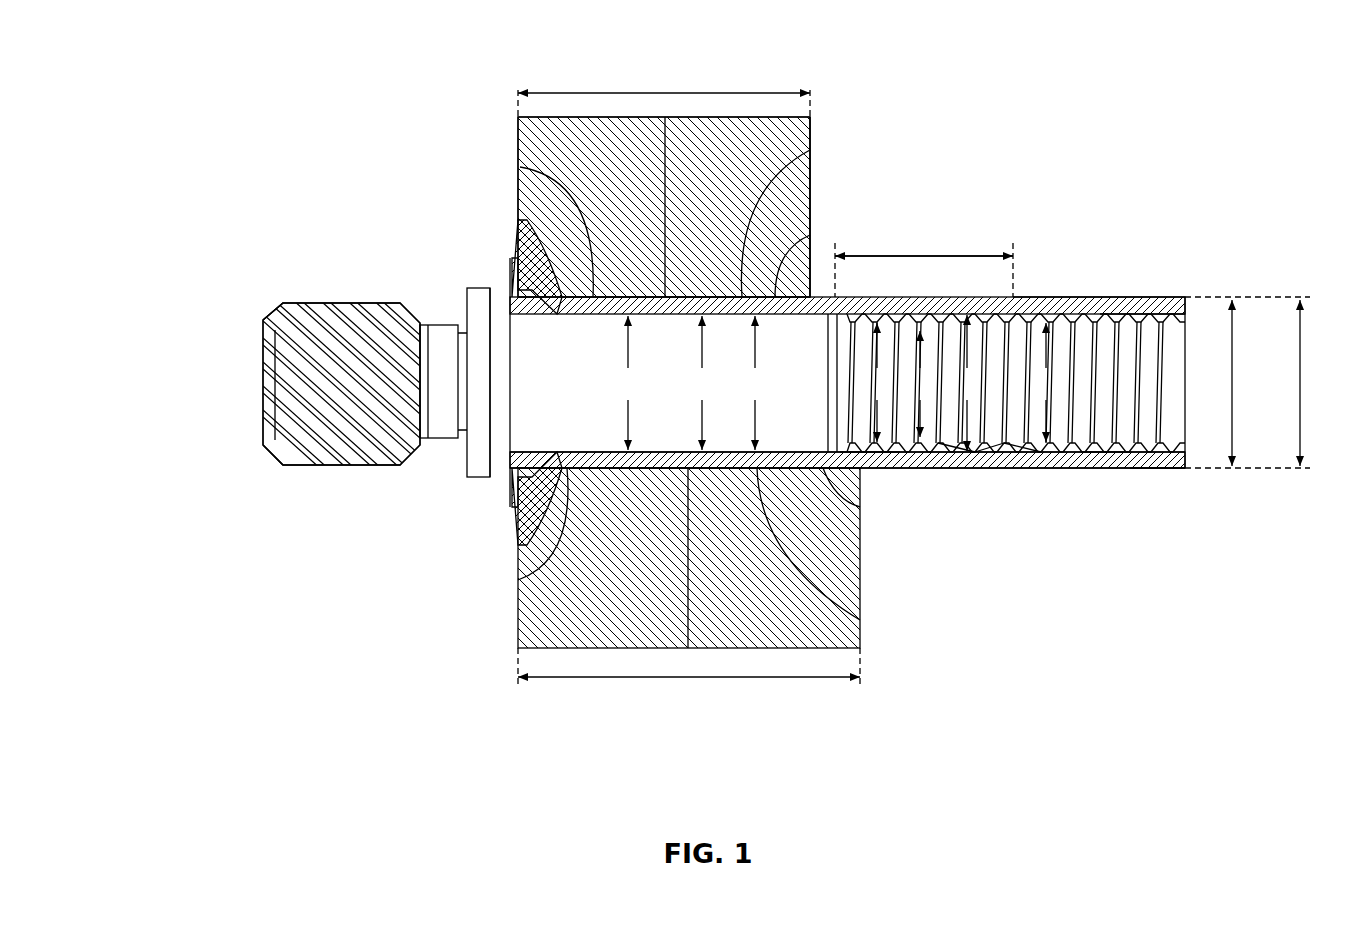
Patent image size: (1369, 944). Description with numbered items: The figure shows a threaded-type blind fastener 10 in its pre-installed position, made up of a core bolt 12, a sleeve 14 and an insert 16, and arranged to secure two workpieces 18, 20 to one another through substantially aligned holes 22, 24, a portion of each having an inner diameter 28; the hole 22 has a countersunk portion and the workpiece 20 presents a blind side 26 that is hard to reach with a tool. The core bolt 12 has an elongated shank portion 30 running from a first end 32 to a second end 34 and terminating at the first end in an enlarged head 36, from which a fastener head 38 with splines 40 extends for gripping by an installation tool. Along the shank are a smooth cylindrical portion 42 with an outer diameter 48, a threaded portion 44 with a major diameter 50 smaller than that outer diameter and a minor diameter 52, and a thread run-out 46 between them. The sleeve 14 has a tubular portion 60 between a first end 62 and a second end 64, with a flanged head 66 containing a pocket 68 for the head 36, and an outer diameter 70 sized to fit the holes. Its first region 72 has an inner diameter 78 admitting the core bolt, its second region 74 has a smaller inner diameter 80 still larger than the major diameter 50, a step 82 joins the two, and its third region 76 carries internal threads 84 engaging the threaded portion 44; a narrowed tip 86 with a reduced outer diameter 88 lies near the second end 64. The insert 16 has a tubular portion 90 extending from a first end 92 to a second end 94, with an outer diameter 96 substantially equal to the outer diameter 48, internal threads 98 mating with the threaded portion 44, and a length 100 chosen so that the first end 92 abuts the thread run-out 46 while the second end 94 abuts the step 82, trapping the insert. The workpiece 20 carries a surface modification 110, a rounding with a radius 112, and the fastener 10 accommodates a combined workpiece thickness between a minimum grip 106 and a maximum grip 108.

The fastener 10 is at (245, 100).
The core bolt 12 is at (265, 400).
The sleeve 14 is at (858, 520).
The insert 16 is at (908, 450).
The workpiece 18 is at (540, 133).
The workpiece 20 is at (800, 133).
The hole 22 is at (540, 177).
The hole 24 is at (775, 260).
The blind side 26 is at (812, 190).
The inner diameter 28 is at (702, 383).
The elongated shank portion 30 is at (527, 433).
The first end 32 is at (492, 365).
The second end 34 is at (1190, 310).
The head 36 is at (465, 300).
The fastener head 38 is at (265, 340).
The splines 40 is at (305, 300).
The smooth cylindrical portion 42 is at (467, 433).
The threaded portion 44 is at (1073, 405).
The thread run-out 46 is at (858, 328).
The outer diameter 48 is at (626, 383).
The major diameter 50 is at (877, 382).
The minor diameter 52 is at (920, 384).
The tubular portion 60 is at (782, 290).
The first end 62 is at (560, 540).
The second end 64 is at (1120, 297).
The flanged head 66 is at (530, 512).
The pocket 68 is at (522, 300).
The outer diameter 70 is at (1293, 375).
The first region 72 is at (840, 603).
The second region 74 is at (1028, 310).
The third region 76 is at (1097, 297).
The inner diameter 78 is at (757, 383).
The inner diameter 80 is at (1046, 382).
The step 82 is at (1013, 450).
The internal threads 84 is at (1107, 450).
The narrowed tip 86 is at (1160, 455).
The outer diameter 88 is at (1223, 375).
The tubular portion 90 is at (927, 445).
The first end 92 is at (867, 470).
The second end 94 is at (983, 444).
The outer diameter 96 is at (967, 383).
The internal threads 98 is at (953, 444).
The length 100 is at (930, 257).
The minimum grip 106 is at (653, 88).
The maximum grip 108 is at (681, 690).
The surface modification 110 is at (815, 297).
The radius 112 is at (924, 270).